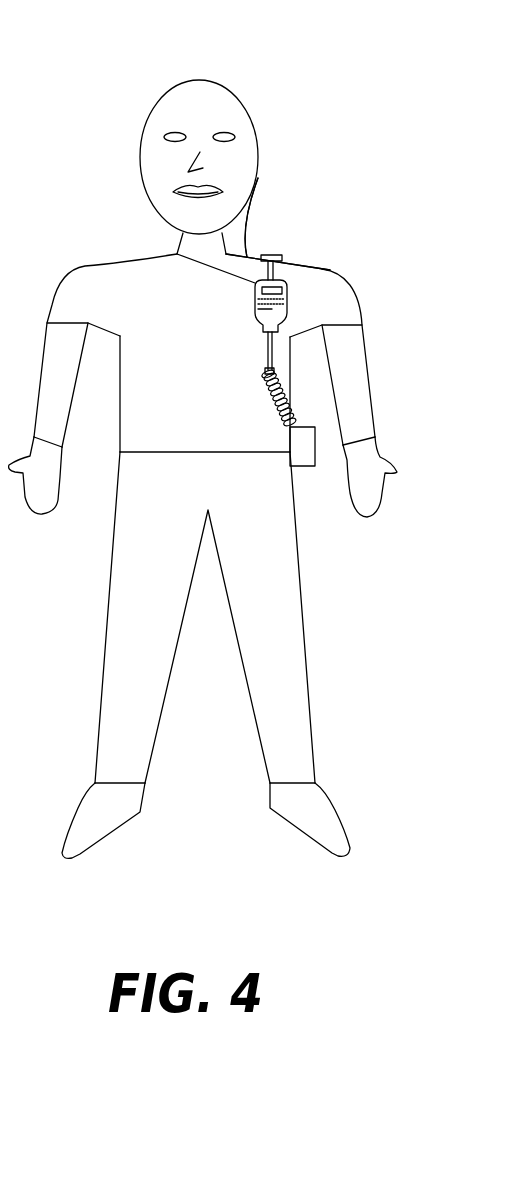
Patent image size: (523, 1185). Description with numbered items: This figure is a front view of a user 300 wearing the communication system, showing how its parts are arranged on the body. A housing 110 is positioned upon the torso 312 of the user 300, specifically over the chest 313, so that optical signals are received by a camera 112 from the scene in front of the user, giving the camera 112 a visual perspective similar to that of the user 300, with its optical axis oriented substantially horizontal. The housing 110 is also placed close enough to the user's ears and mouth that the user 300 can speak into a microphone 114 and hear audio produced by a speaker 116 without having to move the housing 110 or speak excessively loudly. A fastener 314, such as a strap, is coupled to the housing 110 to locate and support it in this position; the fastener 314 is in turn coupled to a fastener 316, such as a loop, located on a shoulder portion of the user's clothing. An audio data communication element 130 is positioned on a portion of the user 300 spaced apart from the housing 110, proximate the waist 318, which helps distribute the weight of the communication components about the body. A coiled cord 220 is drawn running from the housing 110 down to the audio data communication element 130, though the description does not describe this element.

The user 300 is at (120, 47).
The housing 110 is at (251, 303).
The camera 112 is at (175, 255).
The microphone 114 is at (255, 284).
The speaker 116 is at (255, 302).
The audio data communication element 130 is at (308, 427).
The coiled cable 220 is at (275, 420).
The torso 312 is at (199, 343).
The chest 313 is at (330, 270).
The fastener 314 is at (257, 255).
The fastener 316 is at (277, 254).
The waist 318 is at (252, 451).